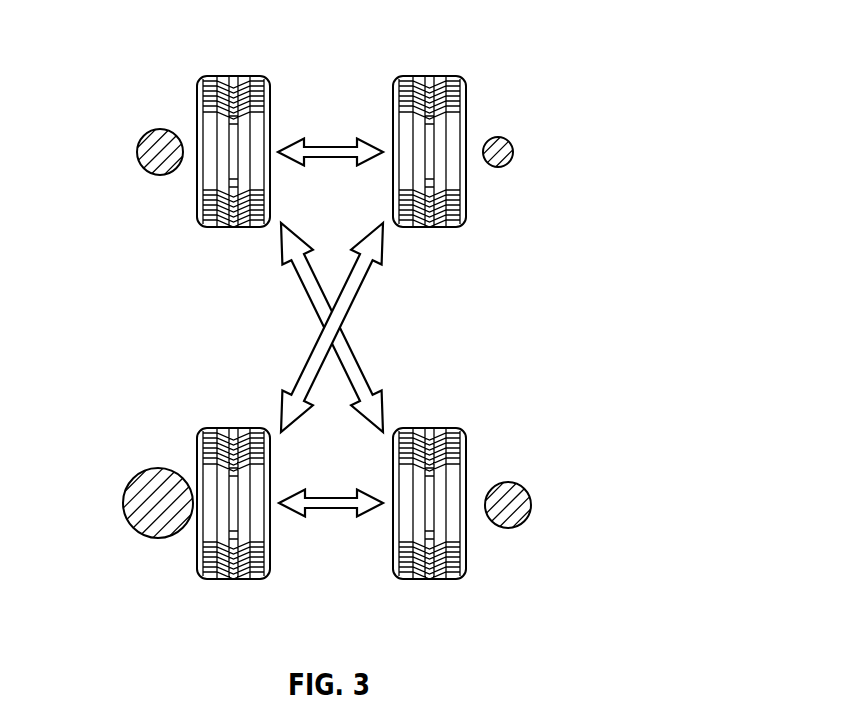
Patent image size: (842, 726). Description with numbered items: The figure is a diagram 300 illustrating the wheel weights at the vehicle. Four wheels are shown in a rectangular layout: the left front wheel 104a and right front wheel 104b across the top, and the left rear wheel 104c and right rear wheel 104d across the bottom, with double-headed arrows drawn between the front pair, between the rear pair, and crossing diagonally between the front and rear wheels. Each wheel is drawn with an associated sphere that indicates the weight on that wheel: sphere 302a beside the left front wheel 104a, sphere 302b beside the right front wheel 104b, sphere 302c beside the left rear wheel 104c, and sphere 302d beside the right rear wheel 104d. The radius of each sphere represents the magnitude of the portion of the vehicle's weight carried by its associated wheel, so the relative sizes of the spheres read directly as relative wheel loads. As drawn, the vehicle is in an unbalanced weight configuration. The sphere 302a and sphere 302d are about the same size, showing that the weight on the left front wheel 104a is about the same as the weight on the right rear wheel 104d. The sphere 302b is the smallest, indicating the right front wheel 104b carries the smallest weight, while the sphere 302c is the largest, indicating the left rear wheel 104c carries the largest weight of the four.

The diagram 300 is at (628, 71).
The left front wheel 104a is at (225, 77).
The right front wheel 104b is at (426, 77).
The left rear wheel 104c is at (225, 428).
The right rear wheel 104d is at (427, 428).
The sphere 302a is at (140, 137).
The sphere 302b is at (509, 141).
The sphere 302c is at (133, 478).
The sphere 302d is at (531, 503).